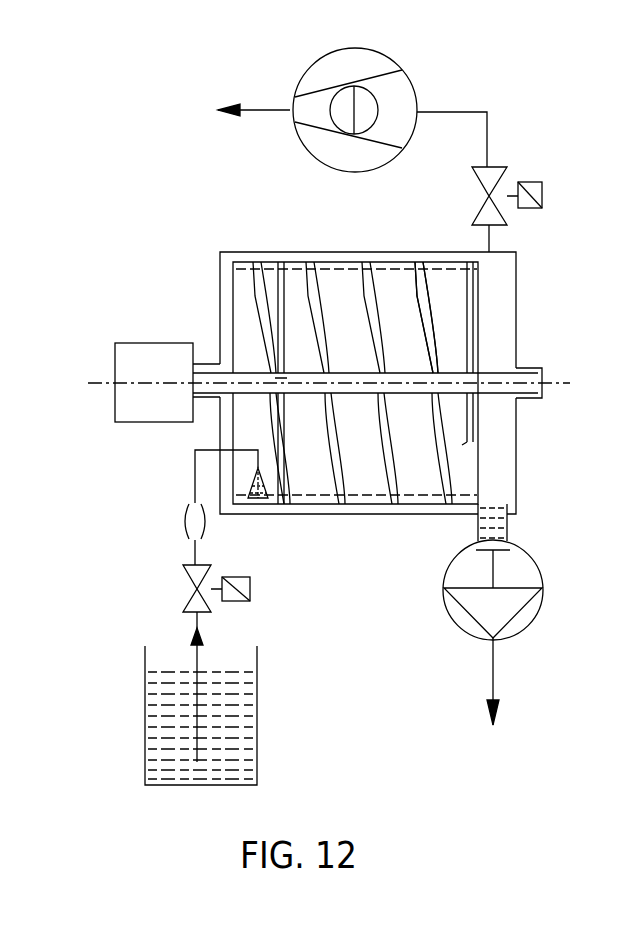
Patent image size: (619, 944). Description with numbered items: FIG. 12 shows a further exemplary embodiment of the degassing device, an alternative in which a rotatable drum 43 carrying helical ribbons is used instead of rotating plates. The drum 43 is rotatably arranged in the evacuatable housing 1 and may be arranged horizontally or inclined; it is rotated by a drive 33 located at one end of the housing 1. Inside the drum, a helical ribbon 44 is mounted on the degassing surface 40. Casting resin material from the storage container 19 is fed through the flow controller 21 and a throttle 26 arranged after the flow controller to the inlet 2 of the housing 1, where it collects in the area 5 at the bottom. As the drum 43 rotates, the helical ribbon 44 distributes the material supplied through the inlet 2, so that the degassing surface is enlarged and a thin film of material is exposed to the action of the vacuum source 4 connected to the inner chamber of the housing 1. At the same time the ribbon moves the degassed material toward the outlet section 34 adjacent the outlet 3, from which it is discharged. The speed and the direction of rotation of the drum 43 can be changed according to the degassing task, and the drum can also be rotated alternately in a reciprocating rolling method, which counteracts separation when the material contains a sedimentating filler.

The housing 1 is at (517, 316).
The inlet 2 is at (178, 449).
The outlet 3 is at (508, 527).
The vacuum source 4 is at (309, 146).
The area 5 is at (308, 493).
The storage container 19 is at (150, 718).
The flow controller 21 is at (190, 597).
The throttle 26 is at (208, 528).
The drive 33 is at (125, 397).
The outlet section 34 is at (510, 505).
The degassing surface 40 is at (330, 262).
The drum 43 is at (478, 470).
The helical ribbon 44 is at (427, 303).